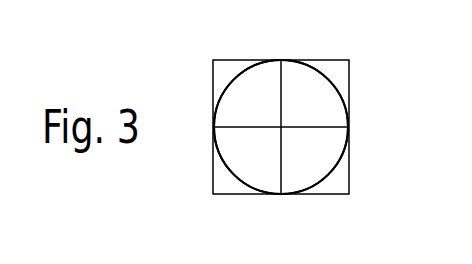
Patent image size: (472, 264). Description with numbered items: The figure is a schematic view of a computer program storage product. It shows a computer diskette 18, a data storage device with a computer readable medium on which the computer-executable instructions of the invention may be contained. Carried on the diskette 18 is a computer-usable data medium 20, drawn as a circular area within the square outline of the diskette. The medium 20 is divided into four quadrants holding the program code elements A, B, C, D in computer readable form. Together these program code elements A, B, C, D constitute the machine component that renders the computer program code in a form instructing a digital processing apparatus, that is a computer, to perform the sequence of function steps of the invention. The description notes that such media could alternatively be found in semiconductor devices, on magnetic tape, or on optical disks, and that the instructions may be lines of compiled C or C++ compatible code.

The computer diskette 18 is at (263, 58).
The computer-usable data medium 20 is at (337, 108).
The program code element A is at (247, 93).
The program code element B is at (314, 93).
The program code element C is at (314, 160).
The program code element D is at (247, 160).